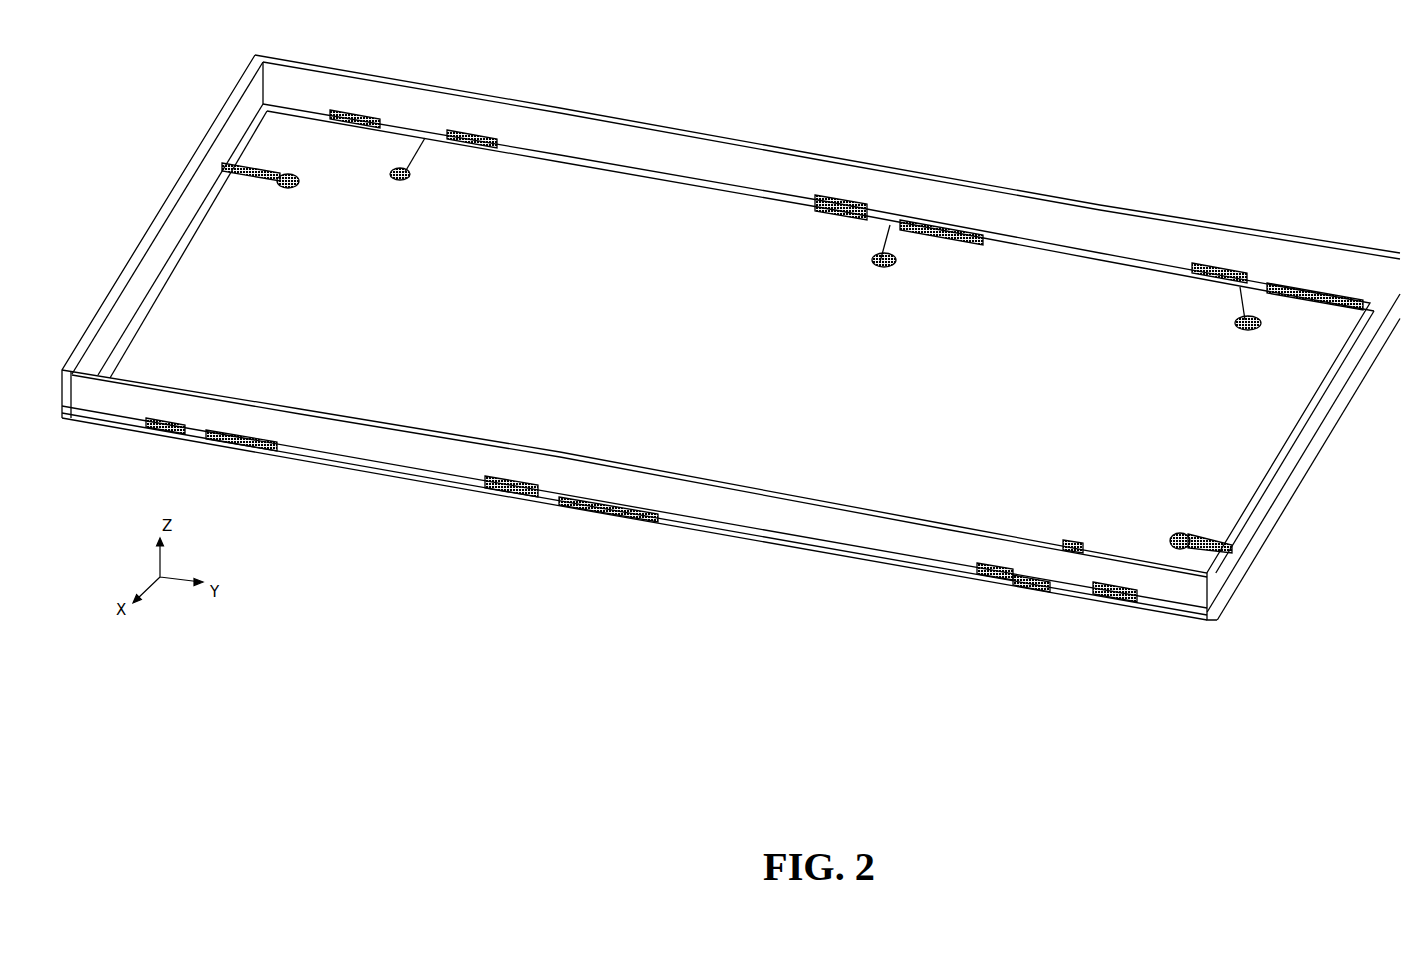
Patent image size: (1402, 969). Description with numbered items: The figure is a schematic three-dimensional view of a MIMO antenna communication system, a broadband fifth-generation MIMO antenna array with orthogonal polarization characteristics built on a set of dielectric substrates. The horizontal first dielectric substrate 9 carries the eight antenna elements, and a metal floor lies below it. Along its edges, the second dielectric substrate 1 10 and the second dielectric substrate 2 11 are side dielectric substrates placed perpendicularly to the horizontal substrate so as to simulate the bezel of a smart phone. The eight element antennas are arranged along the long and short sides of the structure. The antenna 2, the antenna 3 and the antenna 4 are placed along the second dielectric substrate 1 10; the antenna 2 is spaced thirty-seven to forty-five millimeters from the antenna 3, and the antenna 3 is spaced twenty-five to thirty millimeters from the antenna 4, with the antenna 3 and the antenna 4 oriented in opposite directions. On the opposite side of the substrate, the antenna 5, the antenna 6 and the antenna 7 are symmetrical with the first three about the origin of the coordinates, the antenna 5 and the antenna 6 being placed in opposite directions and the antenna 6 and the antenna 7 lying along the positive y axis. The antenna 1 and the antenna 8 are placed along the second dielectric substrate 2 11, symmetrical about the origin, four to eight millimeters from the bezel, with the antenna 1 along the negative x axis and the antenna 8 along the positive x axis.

The antenna 1 is at (220, 167).
The antenna 2 is at (420, 122).
The antenna 3 is at (890, 200).
The antenna 4 is at (1247, 267).
The antenna 5 is at (202, 427).
The antenna 6 is at (577, 492).
The antenna 7 is at (1038, 575).
The antenna 8 is at (1247, 545).
The first dielectric substrate 9 is at (577, 351).
The second dielectric substrate 1 10 is at (693, 152).
The second dielectric substrate 2 11 is at (1313, 453).